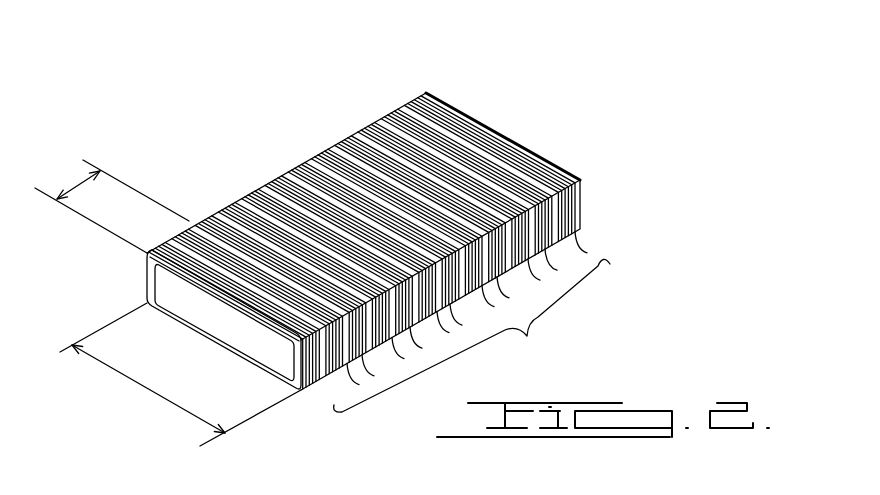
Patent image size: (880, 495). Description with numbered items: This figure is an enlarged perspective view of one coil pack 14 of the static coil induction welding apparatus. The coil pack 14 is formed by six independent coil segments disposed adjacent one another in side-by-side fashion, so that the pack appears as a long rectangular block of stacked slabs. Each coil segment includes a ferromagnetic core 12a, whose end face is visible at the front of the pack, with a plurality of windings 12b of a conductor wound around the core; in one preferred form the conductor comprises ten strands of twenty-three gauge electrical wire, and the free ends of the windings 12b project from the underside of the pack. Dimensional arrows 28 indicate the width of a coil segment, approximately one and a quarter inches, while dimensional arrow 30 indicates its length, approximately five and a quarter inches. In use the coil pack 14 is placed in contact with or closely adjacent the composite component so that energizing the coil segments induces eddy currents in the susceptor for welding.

The ferromagnetic core 12a is at (217, 320).
The windings 12b is at (327, 392).
The coil pack 14 is at (472, 335).
The dimensional arrows 28 is at (70, 190).
The dimensional arrow 30 is at (117, 371).